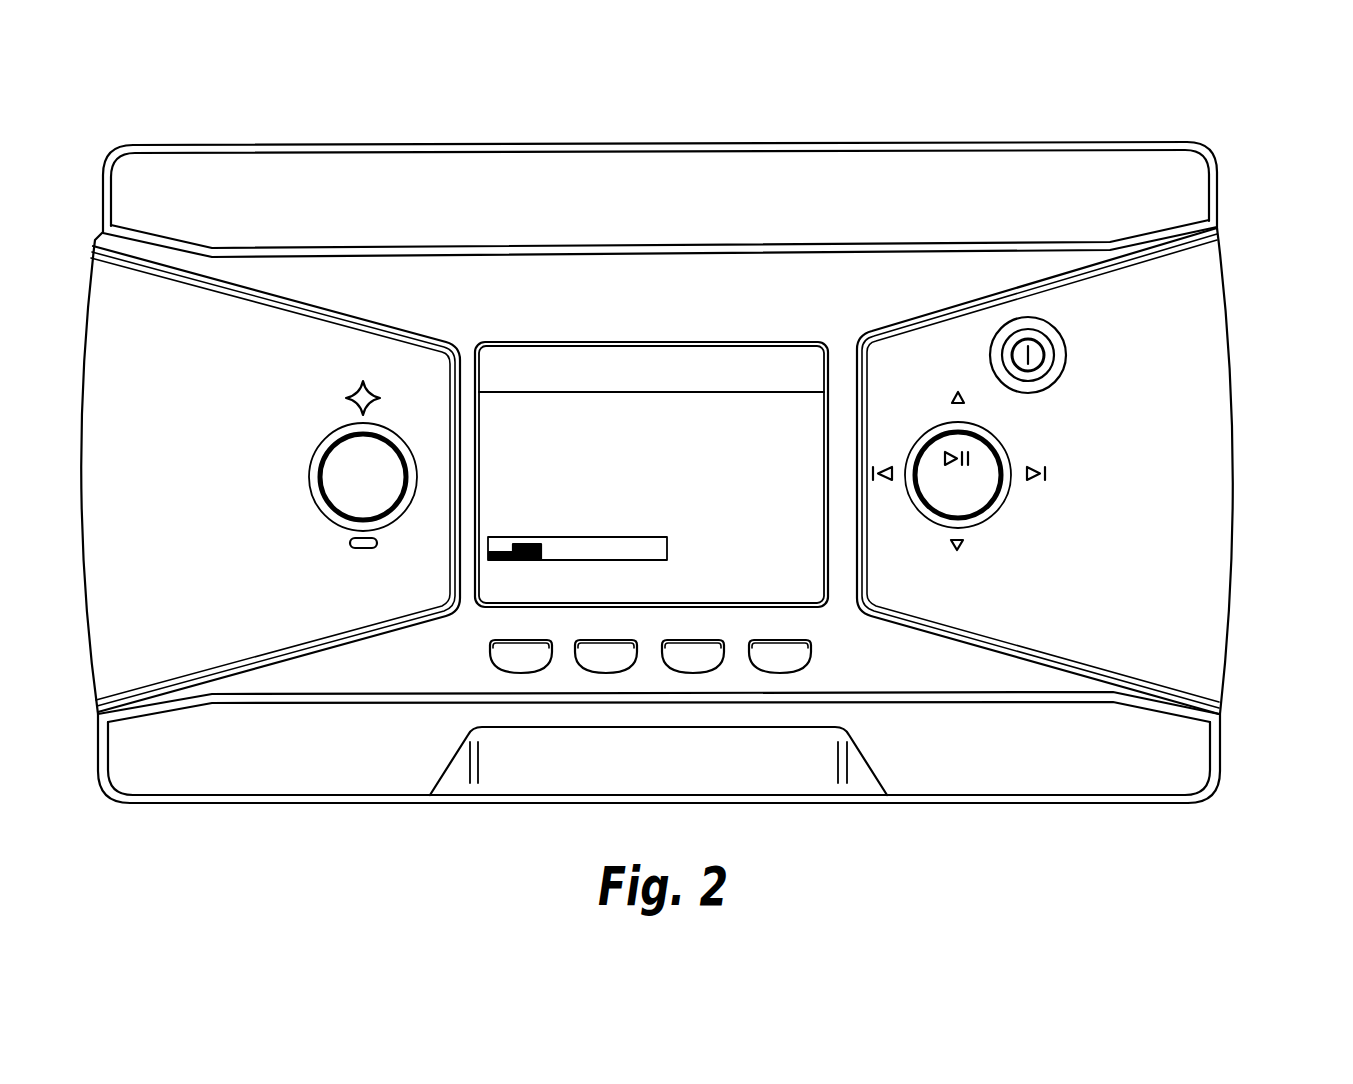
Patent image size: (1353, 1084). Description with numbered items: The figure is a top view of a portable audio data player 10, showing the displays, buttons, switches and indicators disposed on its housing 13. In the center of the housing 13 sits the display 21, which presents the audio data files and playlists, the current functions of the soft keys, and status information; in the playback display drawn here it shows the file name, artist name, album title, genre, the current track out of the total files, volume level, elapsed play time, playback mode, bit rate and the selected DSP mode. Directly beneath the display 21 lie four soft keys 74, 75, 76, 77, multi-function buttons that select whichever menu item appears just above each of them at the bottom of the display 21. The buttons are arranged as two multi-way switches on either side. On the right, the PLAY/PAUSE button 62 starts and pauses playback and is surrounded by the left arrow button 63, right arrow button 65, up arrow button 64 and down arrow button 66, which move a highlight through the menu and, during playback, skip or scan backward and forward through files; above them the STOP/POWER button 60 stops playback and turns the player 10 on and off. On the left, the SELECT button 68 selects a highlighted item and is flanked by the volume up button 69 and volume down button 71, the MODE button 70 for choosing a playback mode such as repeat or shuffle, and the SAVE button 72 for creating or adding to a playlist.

The audio data player 10 is at (1133, 142).
The housing 13 is at (1221, 296).
The display 21 is at (528, 342).
The STOP/POWER button 60 is at (1044, 354).
The PLAY/PAUSE button 62 is at (998, 452).
The left arrow button 63 is at (883, 464).
The up arrow button 64 is at (957, 392).
The right arrow button 65 is at (1034, 487).
The down arrow button 66 is at (962, 551).
The SELECT button 68 is at (333, 455).
The volume up button 69 is at (355, 386).
The MODE button 70 is at (432, 438).
The volume down button 71 is at (357, 552).
The SAVE button 72 is at (234, 482).
The soft key 74 is at (489, 657).
The soft key 75 is at (597, 674).
The soft key 76 is at (693, 674).
The soft key 77 is at (812, 657).